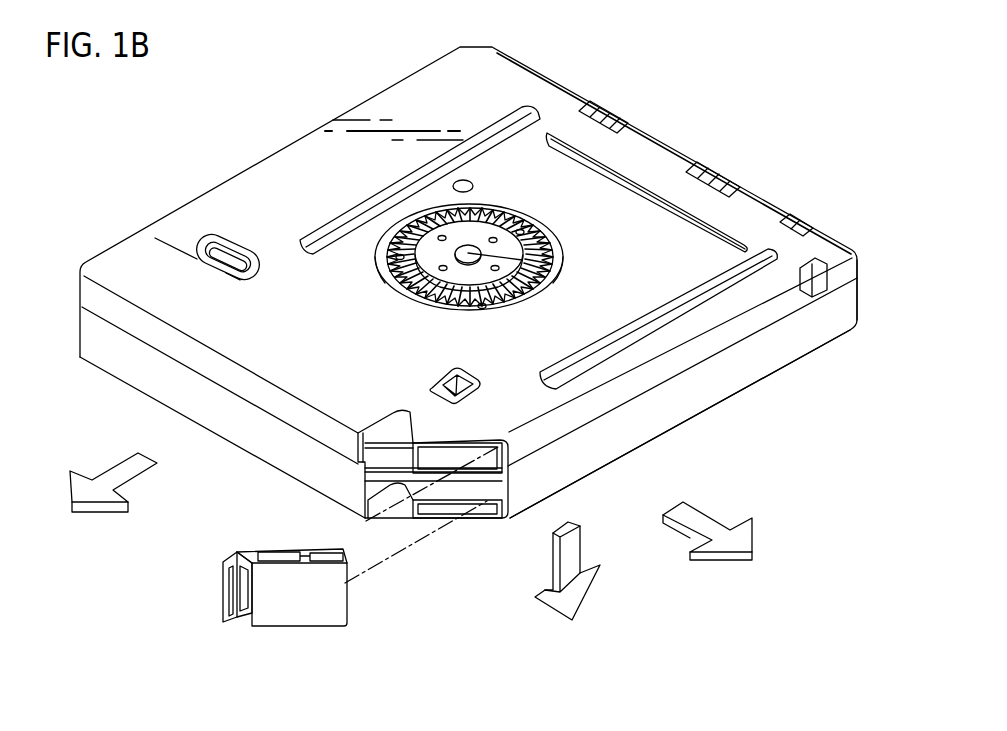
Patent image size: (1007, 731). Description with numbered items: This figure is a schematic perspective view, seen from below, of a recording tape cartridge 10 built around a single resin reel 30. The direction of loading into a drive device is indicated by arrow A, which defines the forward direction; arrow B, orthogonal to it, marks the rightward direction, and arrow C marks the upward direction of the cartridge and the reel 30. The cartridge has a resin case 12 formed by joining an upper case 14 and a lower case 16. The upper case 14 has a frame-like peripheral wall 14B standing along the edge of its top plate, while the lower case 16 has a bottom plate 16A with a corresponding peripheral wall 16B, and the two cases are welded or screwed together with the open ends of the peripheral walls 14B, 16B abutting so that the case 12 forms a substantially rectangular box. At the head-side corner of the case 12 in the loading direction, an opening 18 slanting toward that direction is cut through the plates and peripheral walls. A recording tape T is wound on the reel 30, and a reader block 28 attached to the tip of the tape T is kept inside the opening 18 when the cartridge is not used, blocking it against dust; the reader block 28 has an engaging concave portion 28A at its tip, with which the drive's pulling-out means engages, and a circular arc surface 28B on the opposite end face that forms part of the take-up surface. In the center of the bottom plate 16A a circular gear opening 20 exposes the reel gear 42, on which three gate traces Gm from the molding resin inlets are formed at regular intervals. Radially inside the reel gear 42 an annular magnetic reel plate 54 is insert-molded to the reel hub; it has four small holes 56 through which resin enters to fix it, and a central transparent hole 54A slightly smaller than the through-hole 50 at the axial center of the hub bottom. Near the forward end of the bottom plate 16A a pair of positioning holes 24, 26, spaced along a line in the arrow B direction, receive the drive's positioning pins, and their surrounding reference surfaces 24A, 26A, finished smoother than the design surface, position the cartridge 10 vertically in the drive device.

The recording tape cartridge 10 is at (287, 124).
The case 12 is at (770, 383).
The upper case 14 is at (668, 395).
The lower case 16 is at (668, 355).
The peripheral wall 14B is at (296, 468).
The bottom plate 16A is at (260, 357).
The peripheral wall 16B is at (280, 408).
The opening 18 is at (382, 437).
The gear opening 20 is at (565, 246).
The positioning hole 24 is at (462, 376).
The reference surface 24A is at (445, 373).
The positioning hole 26 is at (236, 243).
The reference surface 26A is at (218, 250).
The reader block 28 is at (352, 607).
The engaging concave portion 28A is at (236, 576).
The circular arc surface 28B is at (357, 551).
The reel 30 is at (558, 222).
The reel gear 42 is at (532, 230).
The through-hole 50 is at (523, 257).
The reel plate 54 is at (480, 235).
The transparent hole 54A is at (660, 298).
The small holes 56 is at (413, 211).
The gate traces Gm is at (403, 256).
The arrow A is at (123, 470).
The arrow B is at (698, 519).
The arrow C is at (572, 560).
The recording tape T is at (388, 537).